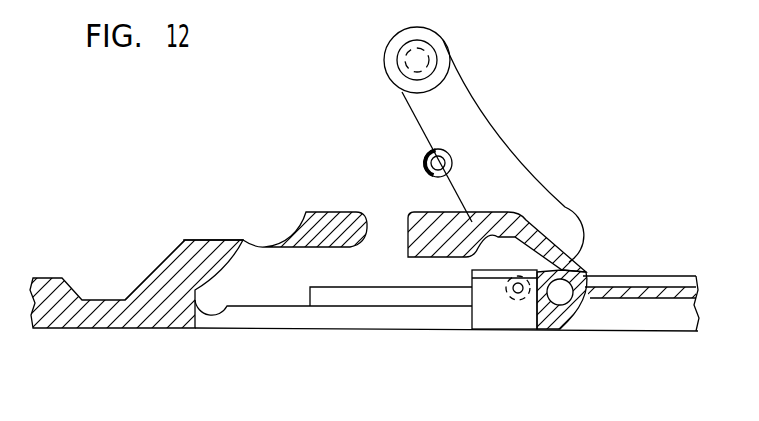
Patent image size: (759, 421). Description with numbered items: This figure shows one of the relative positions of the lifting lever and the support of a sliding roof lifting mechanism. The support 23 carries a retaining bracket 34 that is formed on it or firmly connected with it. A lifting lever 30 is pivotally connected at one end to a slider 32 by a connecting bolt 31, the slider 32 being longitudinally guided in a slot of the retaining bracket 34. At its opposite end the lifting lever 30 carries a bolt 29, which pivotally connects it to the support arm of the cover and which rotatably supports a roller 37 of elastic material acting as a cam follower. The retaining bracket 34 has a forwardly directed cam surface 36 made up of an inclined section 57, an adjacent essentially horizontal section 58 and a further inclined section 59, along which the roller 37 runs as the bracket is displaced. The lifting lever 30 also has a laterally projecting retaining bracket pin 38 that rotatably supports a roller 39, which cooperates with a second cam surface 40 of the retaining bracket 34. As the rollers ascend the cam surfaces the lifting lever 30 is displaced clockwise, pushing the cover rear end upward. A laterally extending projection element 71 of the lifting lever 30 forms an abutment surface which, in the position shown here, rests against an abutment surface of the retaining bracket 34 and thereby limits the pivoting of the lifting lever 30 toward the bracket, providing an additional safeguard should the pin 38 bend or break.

The support 23 is at (648, 313).
The bolt 29 is at (412, 62).
The lifting lever 30 is at (503, 188).
The connecting bolt 31 is at (514, 300).
The slider 32 is at (482, 295).
The retaining bracket 34 is at (163, 310).
The cam surface 36 is at (185, 239).
The roller 37 is at (440, 44).
The retaining bracket pin 38 is at (427, 170).
The roller 39 is at (427, 155).
The cam surface 40 is at (249, 262).
The inclined section 57 is at (153, 263).
The section 58 is at (225, 240).
The inclined cam surface section 59 is at (295, 226).
The projection element 71 is at (507, 253).